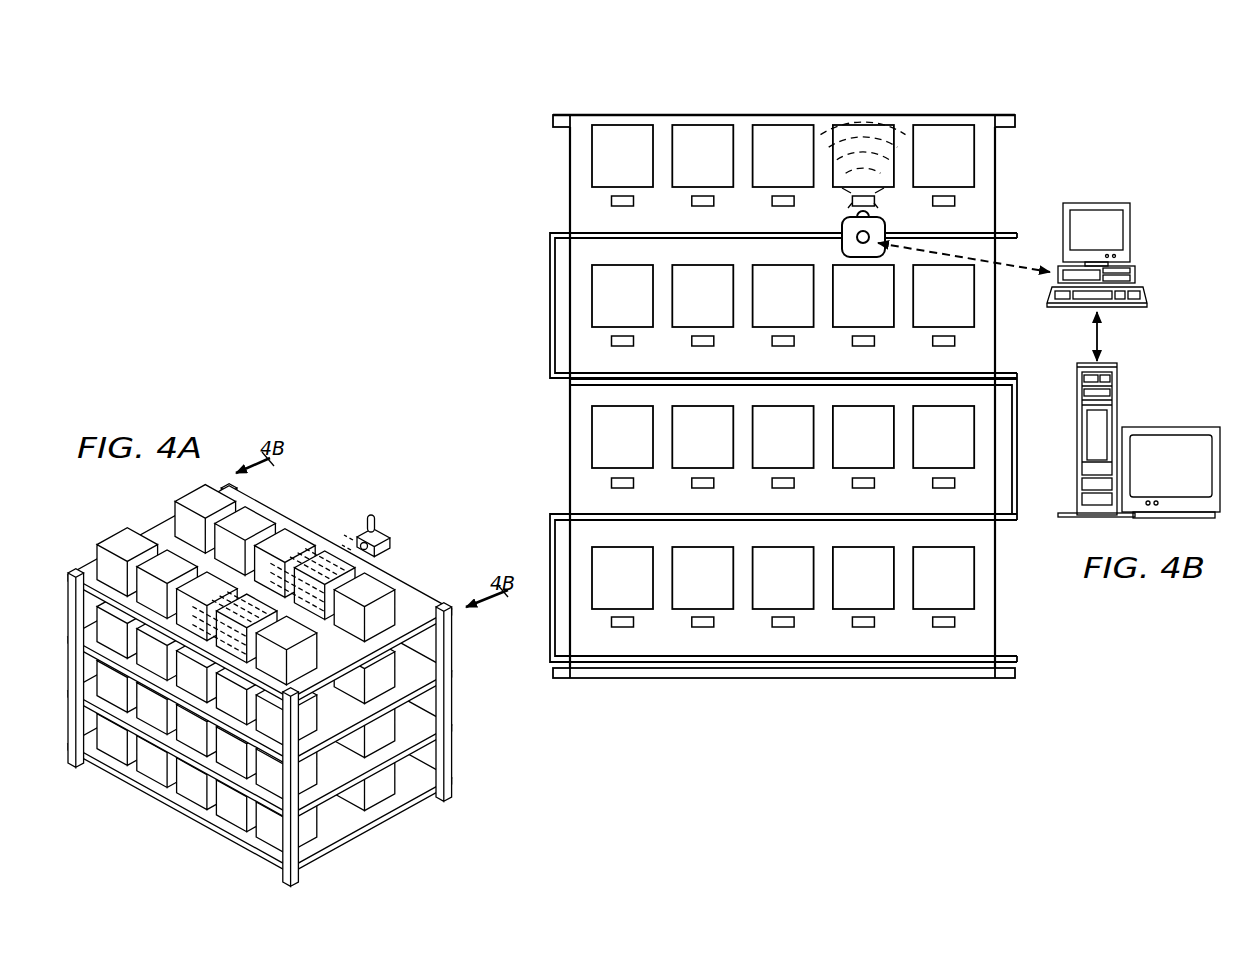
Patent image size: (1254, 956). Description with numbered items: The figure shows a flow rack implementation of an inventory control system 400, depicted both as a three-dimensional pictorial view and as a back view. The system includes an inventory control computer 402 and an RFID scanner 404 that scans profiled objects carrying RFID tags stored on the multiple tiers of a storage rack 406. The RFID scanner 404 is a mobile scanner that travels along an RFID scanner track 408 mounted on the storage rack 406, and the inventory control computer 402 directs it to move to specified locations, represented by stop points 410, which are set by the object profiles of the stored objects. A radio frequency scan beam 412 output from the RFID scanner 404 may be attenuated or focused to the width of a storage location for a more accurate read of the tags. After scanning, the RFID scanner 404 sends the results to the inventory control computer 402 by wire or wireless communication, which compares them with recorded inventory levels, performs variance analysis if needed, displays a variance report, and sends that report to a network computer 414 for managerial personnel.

In FIG. 4B, the inventory control system 400 is at (1137, 286).
In FIG. 4B, the inventory control computer 402 is at (1131, 231).
In FIG. 4A, the RFID scanner 404 is at (382, 527).
In FIG. 4B, the RFID scanner 404 is at (842, 232).
In FIG. 4A, the storage rack 406 is at (260, 685).
In FIG. 4B, the storage rack 406 is at (745, 374).
In FIG. 4B, the RFID scanner track 408 is at (557, 381).
In FIG. 4B, the stop points 410 is at (932, 623).
In FIG. 4A, the radio frequency scan beam 412 is at (330, 578).
In FIG. 4B, the radio frequency scan beam 412 is at (905, 128).
In FIG. 4B, the network computer 414 is at (1172, 426).